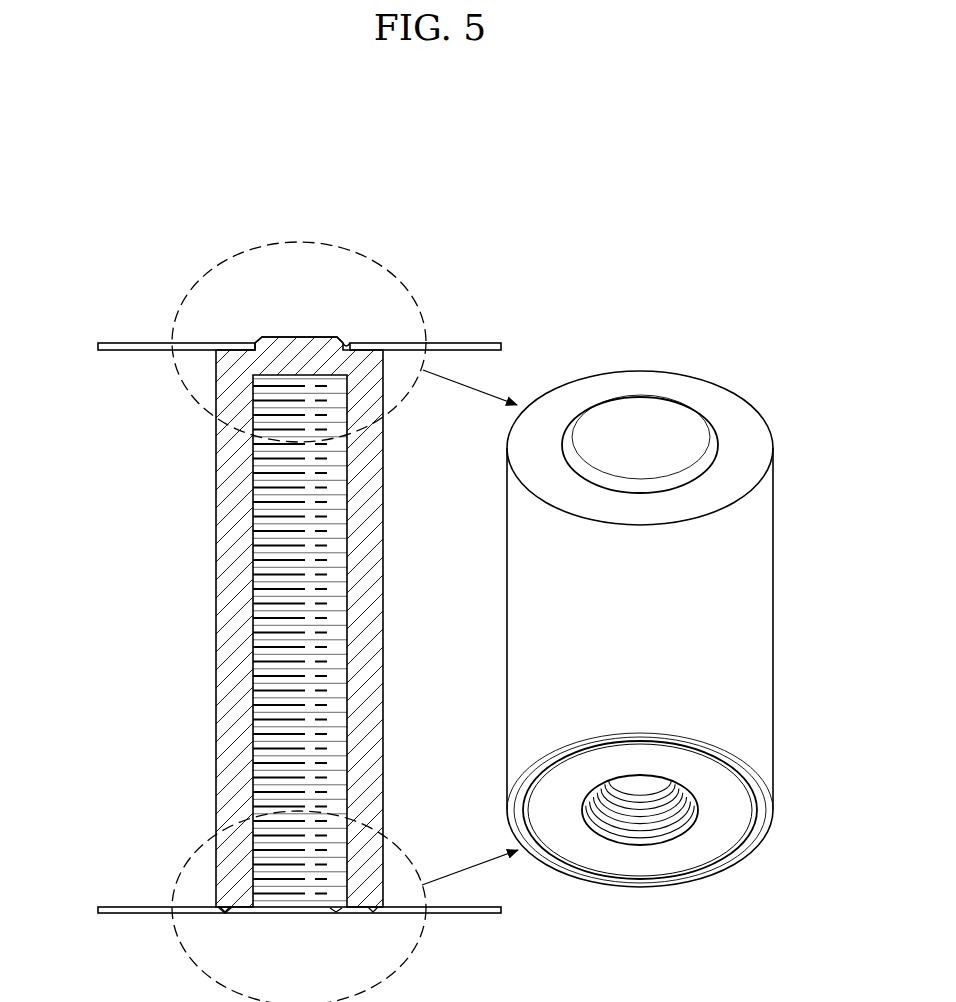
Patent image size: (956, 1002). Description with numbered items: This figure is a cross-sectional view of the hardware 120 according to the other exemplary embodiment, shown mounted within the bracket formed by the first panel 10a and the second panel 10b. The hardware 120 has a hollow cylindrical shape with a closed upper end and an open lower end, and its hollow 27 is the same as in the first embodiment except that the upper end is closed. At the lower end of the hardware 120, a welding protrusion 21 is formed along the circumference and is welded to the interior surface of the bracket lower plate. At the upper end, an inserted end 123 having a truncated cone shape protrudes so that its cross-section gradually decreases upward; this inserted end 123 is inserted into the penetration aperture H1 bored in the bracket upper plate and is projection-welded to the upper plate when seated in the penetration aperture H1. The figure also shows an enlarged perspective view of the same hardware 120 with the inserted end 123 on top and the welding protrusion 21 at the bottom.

The first panel 10a is at (125, 343).
The second panel 10b is at (124, 913).
The hardware 120 is at (216, 570).
The inserted end 123 is at (288, 340).
The penetration aperture H1 is at (336, 346).
The welding protrusion 21 is at (222, 913).
The hollow 27 is at (253, 855).